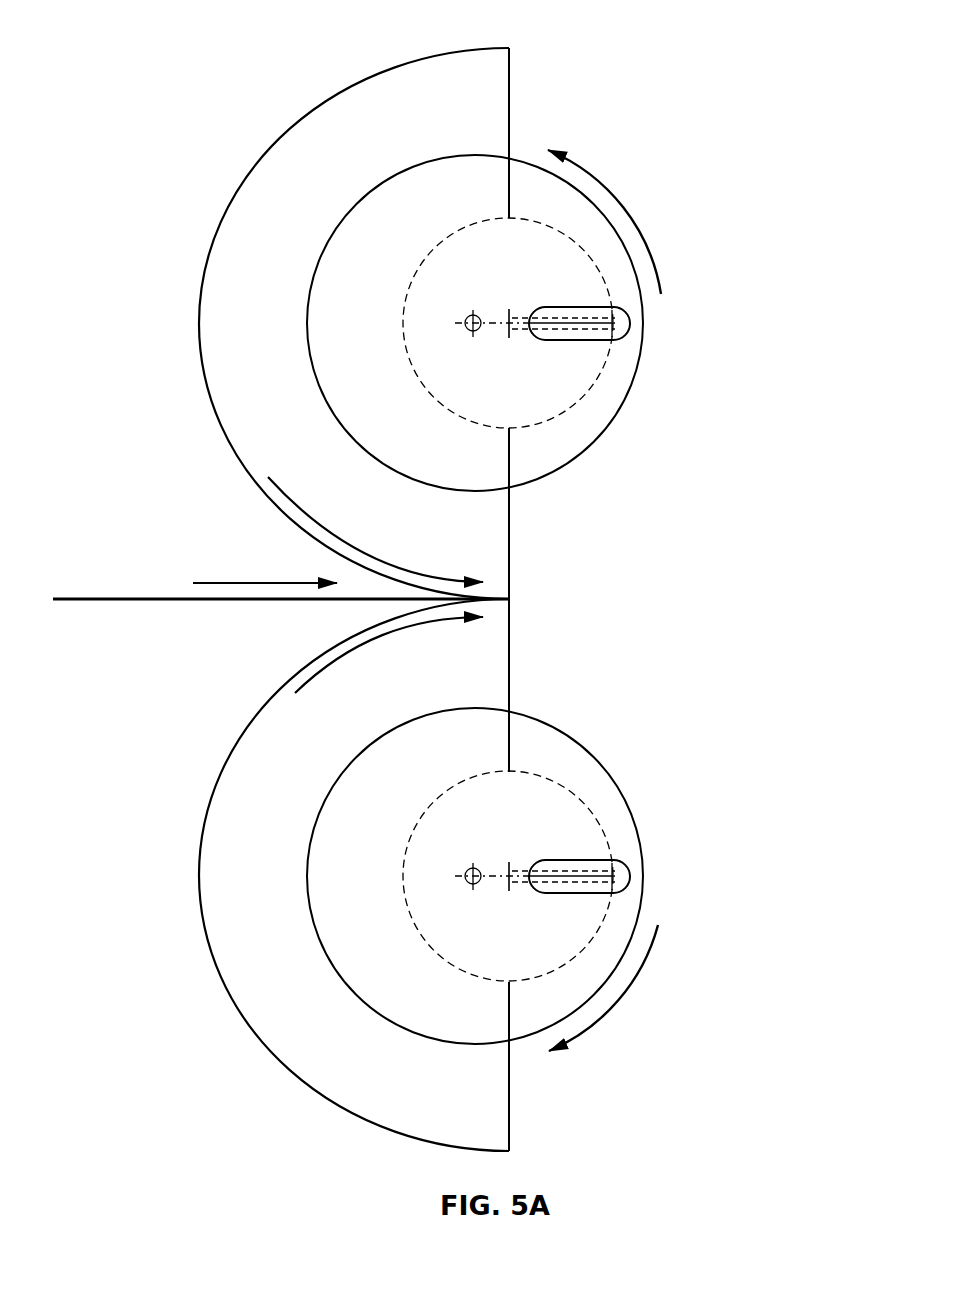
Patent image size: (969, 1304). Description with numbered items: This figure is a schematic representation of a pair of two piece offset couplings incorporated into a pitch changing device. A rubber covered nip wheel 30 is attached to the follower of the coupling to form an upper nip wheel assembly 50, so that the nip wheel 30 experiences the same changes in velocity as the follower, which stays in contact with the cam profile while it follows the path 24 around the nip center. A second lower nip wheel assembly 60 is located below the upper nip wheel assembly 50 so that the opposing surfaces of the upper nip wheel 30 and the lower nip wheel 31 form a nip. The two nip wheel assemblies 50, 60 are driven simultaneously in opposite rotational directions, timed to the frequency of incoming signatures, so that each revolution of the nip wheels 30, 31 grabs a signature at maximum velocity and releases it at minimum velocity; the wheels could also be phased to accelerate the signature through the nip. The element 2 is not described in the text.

The web strip 2 is at (185, 601).
The path 24 is at (562, 418).
The nip wheel 30 is at (306, 101).
The lower nip wheel 31 is at (278, 1072).
The upper nip wheel assembly 50 is at (454, 303).
The lower nip wheel assembly 60 is at (458, 875).